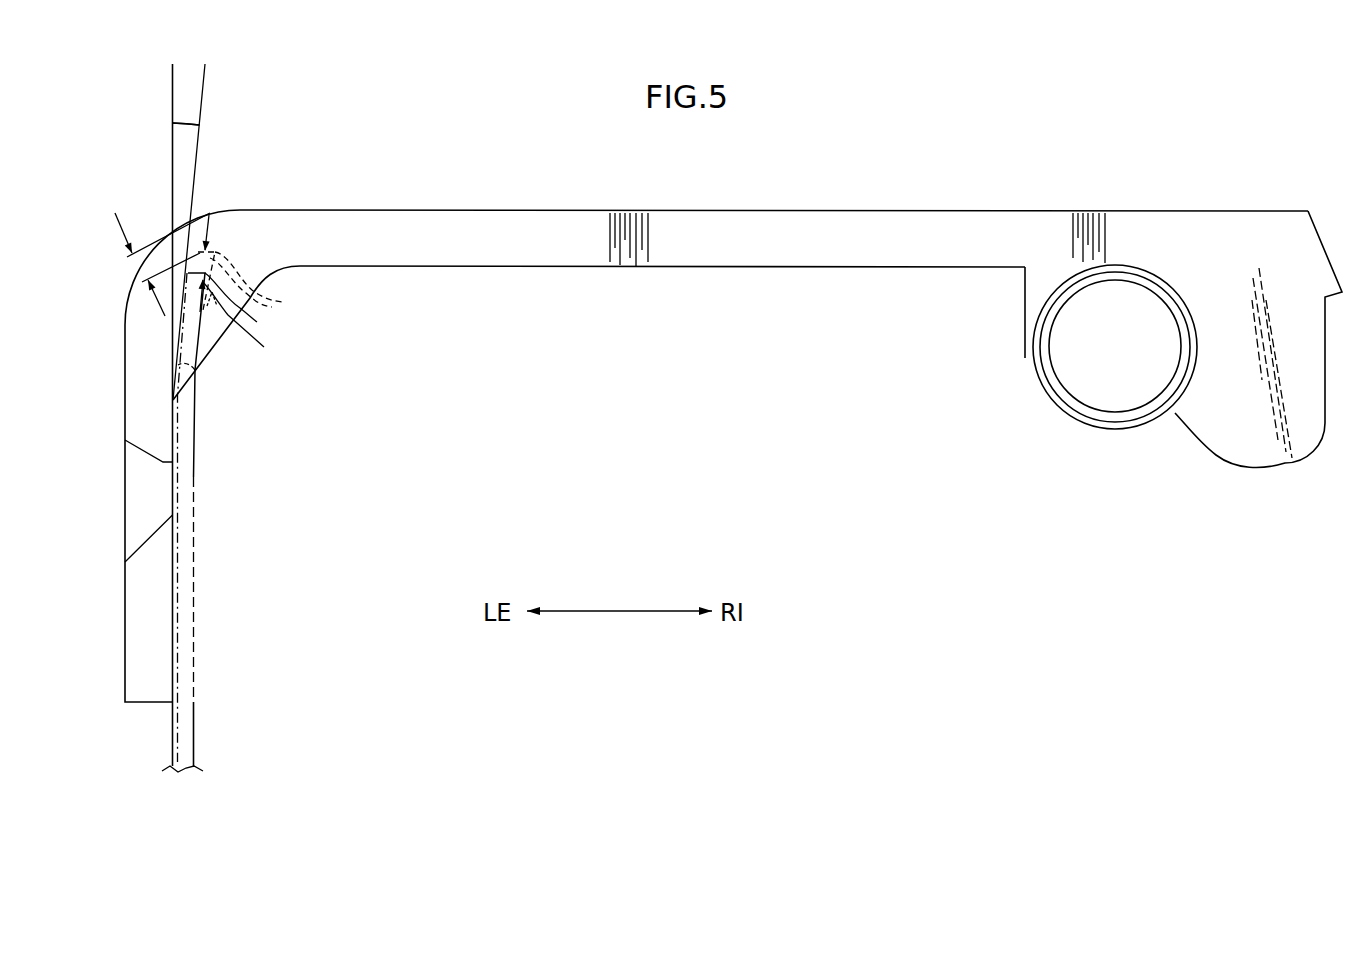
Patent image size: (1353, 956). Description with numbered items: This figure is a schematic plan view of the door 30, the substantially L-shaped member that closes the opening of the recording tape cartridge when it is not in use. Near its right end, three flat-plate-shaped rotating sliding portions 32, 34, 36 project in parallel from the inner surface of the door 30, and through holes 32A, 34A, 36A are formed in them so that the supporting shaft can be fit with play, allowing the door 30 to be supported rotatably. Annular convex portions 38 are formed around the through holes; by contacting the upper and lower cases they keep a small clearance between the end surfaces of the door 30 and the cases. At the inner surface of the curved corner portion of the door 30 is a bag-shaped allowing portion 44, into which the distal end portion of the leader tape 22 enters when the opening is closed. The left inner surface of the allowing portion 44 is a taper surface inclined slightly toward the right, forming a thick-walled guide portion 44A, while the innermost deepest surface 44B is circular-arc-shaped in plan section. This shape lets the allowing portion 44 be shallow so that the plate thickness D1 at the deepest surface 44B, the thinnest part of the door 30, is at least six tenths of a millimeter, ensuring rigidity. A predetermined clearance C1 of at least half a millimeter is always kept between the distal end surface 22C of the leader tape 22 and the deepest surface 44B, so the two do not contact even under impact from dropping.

The leader tape 22 is at (194, 738).
The distal end surface of the leader tape 22C is at (259, 320).
The door 30 is at (714, 207).
The rotating sliding portion 32 is at (1023, 347).
The rotating sliding portion 34 is at (1023, 347).
The rotating sliding portion 36 is at (1025, 358).
The through hole 32A is at (1147, 395).
The through hole 34A is at (1147, 395).
The through hole 36A is at (1108, 410).
The annular convex portion 38 is at (1067, 397).
The allowing portion 44 is at (269, 343).
The guide portion 44A is at (195, 372).
The deepest surface 44B is at (285, 302).
The clearance C1 is at (257, 322).
The plate thickness D1 is at (142, 266).